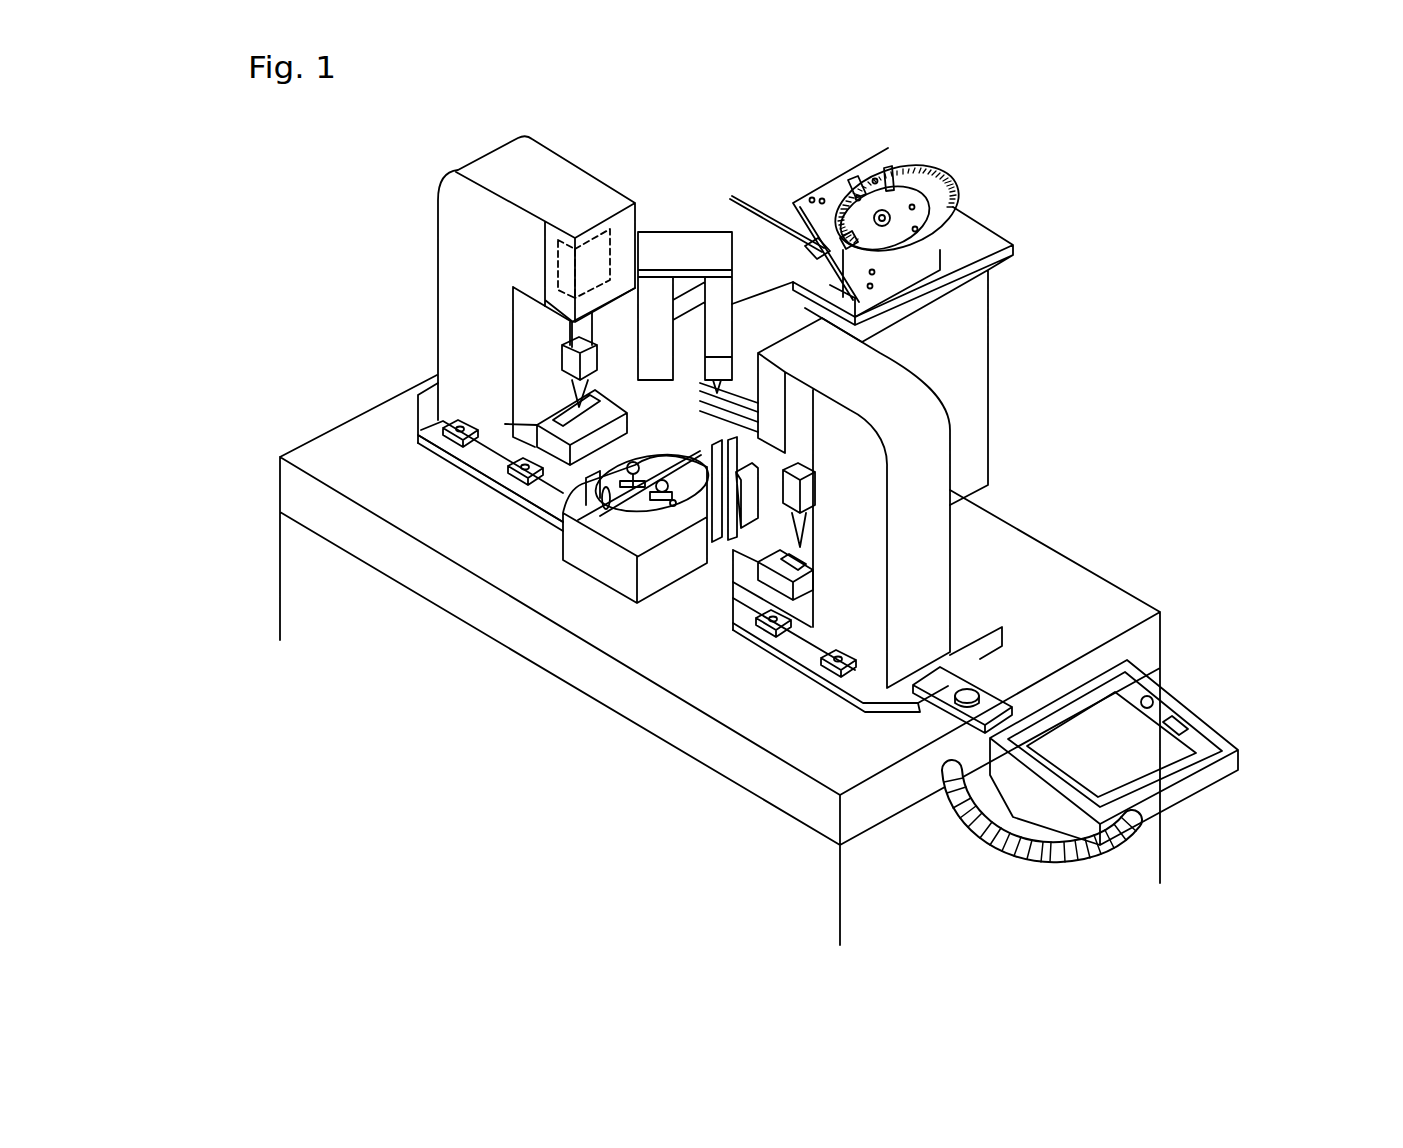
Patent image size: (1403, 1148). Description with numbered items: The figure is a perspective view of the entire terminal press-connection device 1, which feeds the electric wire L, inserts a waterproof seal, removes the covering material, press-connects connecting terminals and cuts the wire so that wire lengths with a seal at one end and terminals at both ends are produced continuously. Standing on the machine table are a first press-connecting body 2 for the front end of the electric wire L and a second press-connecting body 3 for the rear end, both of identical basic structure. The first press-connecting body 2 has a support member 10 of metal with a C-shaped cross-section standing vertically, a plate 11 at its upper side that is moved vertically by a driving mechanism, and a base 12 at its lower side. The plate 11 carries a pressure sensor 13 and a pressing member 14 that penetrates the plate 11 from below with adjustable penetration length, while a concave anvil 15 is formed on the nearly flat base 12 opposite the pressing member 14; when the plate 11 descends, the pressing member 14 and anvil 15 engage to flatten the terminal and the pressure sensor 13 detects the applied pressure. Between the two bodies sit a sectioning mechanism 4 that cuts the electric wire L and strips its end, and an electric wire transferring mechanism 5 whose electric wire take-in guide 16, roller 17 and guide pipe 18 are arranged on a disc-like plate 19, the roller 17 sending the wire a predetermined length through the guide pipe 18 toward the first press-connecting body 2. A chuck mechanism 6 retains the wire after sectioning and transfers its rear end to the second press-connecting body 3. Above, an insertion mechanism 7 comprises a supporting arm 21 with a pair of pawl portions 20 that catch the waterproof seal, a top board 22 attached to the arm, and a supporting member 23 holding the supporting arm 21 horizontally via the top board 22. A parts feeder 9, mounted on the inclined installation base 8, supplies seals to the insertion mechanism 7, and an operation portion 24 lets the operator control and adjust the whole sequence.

The terminal press-connection device 1 is at (1277, 213).
The first press-connecting body 2 is at (497, 329).
The second press-connecting body 3 is at (865, 515).
The sectioning mechanism 4 is at (685, 443).
The electric wire transferring mechanism 5 is at (565, 539).
The chuck mechanism 6 is at (753, 382).
The insertion mechanism 7 is at (712, 255).
The installation base 8 is at (975, 237).
The parts feeder 9 is at (955, 175).
The support member 10 is at (453, 279).
The plate 11 is at (577, 237).
The base 12 is at (512, 465).
The pressure sensor 13 is at (568, 358).
The pressing member 14 is at (578, 388).
The anvil 15 is at (558, 416).
The electric wire take-in guide 16 is at (633, 513).
The roller 17 is at (661, 512).
The guide pipe 18 is at (699, 480).
The disc-like plate 19 is at (545, 521).
The pawl portions 20 is at (762, 418).
The supporting arm 21 is at (721, 330).
The top board 22 is at (698, 232).
The supporting member 23 is at (648, 328).
The operation portion 24 is at (1200, 738).
The electric wire L is at (611, 522).